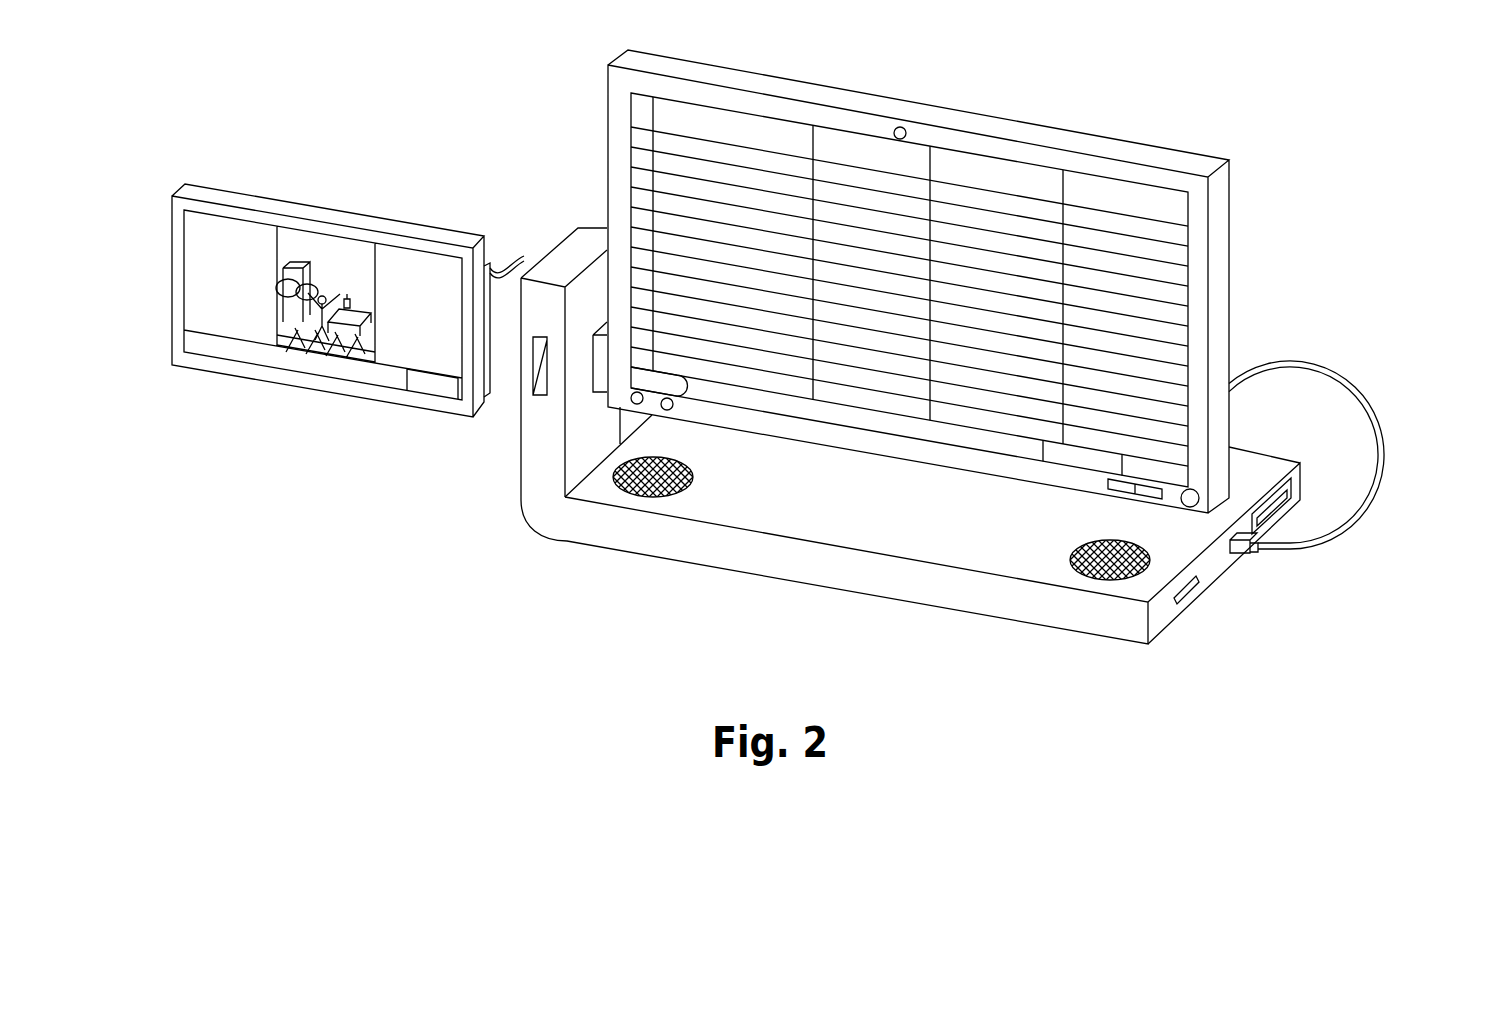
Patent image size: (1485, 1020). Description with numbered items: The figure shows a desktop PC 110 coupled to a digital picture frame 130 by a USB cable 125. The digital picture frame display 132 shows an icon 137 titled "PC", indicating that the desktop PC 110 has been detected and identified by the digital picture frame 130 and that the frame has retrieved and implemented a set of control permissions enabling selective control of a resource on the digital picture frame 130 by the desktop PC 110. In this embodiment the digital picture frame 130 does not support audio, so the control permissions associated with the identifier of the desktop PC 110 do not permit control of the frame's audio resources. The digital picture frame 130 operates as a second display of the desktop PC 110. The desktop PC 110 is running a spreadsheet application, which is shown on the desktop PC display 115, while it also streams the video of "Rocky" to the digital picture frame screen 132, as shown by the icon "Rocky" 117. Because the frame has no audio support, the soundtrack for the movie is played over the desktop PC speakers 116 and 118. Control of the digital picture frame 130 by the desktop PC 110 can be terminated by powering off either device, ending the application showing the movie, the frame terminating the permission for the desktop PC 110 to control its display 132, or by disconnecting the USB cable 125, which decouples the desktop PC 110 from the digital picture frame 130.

The desktop PC 110 is at (867, 93).
The desktop PC display 115 is at (1085, 187).
The desktop PC speaker 116 is at (632, 497).
The icon "Rocky" 117 is at (1050, 457).
The desktop PC speaker 118 is at (1087, 578).
The USB cable 125 is at (1324, 368).
The digital picture frame 130 is at (347, 203).
The digital picture frame display 132 is at (413, 267).
The icon titled "PC" 137 is at (428, 389).